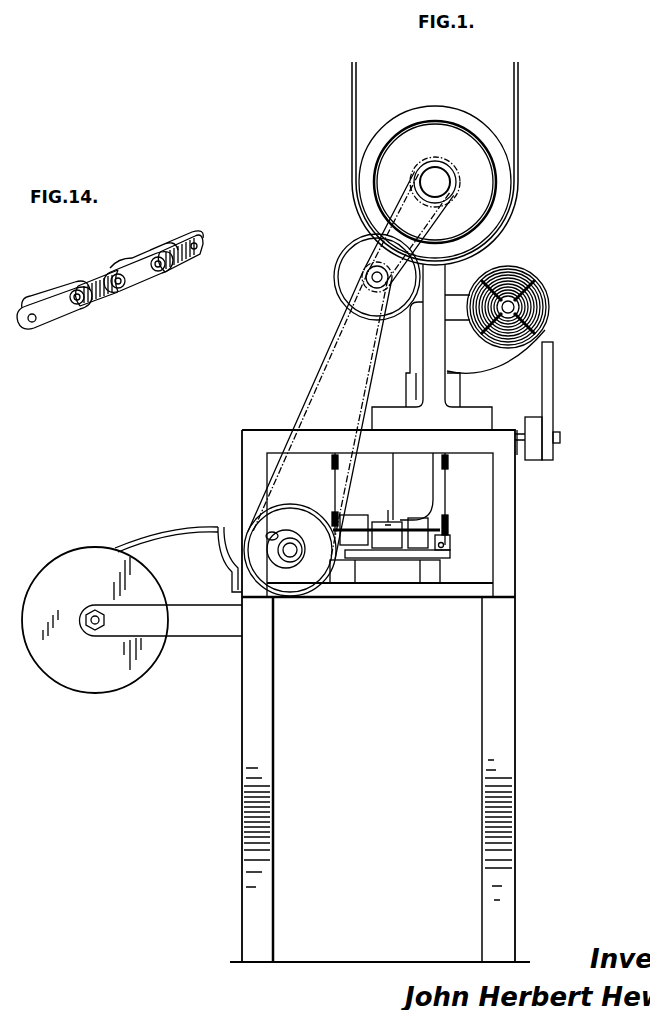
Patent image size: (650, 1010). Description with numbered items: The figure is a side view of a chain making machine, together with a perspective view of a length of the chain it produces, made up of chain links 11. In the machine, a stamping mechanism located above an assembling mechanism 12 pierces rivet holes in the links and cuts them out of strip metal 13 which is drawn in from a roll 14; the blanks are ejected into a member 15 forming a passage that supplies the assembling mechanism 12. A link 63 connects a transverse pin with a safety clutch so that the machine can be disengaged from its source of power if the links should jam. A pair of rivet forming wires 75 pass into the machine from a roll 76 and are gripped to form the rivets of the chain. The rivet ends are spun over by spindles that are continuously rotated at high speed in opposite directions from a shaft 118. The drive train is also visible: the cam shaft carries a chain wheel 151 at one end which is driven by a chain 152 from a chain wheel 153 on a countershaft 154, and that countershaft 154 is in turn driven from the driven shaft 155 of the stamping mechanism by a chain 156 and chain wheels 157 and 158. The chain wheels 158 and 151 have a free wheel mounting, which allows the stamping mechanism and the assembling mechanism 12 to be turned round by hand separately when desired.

In FIG. 14, the chain links 11 is at (75, 280).
In FIG. 1, the assembling mechanism 12 is at (384, 520).
In FIG. 1, the strip metal 13 is at (492, 370).
In FIG. 1, the roll 14 is at (536, 297).
In FIG. 1, the member 15 is at (447, 487).
In FIG. 1, the link 63 is at (394, 466).
In FIG. 1, the rivet forming wires 75 is at (191, 527).
In FIG. 1, the roll 76 is at (58, 584).
In FIG. 1, the shaft 118 is at (561, 437).
In FIG. 1, the chain wheel 151 is at (298, 520).
In FIG. 1, the chain 152 is at (311, 391).
In FIG. 1, the chain wheel 153 is at (362, 289).
In FIG. 1, the countershaft 154 is at (371, 273).
In FIG. 1, the driven shaft 155 is at (441, 183).
In FIG. 1, the chain 156 is at (388, 212).
In FIG. 1, the chain wheel 157 is at (350, 285).
In FIG. 1, the chain wheel 158 is at (423, 169).